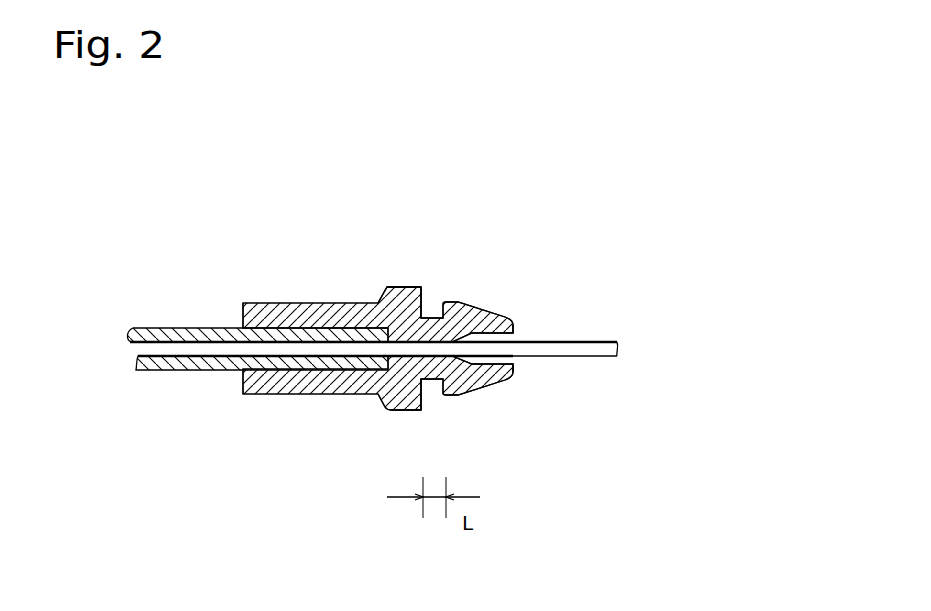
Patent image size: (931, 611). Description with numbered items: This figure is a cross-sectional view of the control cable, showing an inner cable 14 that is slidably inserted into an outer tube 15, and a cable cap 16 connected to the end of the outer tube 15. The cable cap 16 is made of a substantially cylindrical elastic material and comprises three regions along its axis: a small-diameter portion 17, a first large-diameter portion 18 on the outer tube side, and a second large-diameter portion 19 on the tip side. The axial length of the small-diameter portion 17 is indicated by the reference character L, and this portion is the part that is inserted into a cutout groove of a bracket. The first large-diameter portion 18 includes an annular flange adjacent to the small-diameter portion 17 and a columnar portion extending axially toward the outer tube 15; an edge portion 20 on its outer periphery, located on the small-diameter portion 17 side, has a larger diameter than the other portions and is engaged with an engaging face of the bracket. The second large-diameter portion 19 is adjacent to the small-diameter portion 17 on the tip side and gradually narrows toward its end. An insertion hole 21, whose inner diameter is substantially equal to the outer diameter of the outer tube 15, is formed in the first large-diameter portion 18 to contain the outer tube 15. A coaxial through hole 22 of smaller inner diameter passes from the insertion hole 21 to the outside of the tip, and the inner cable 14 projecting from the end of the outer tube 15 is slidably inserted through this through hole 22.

The inner cable 14 is at (577, 348).
The outer tube 15 is at (181, 333).
The cable cap 16 is at (305, 393).
The small-diameter portion 17 is at (433, 318).
The first large-diameter portion 18 is at (349, 313).
The second large-diameter portion 19 is at (475, 313).
The edge portion 20 is at (417, 288).
The insertion hole 21 is at (238, 331).
The through hole 22 is at (514, 360).